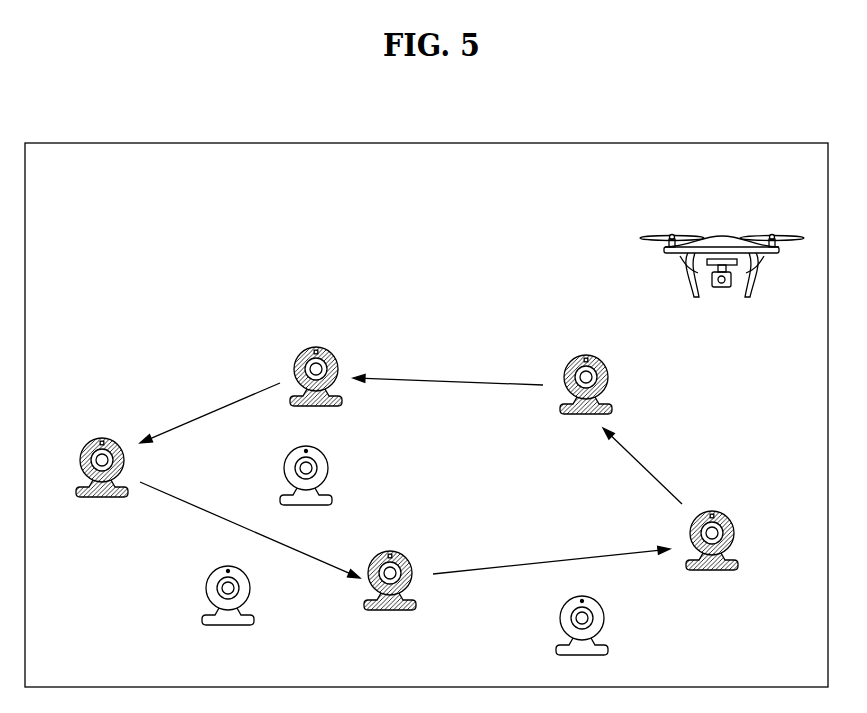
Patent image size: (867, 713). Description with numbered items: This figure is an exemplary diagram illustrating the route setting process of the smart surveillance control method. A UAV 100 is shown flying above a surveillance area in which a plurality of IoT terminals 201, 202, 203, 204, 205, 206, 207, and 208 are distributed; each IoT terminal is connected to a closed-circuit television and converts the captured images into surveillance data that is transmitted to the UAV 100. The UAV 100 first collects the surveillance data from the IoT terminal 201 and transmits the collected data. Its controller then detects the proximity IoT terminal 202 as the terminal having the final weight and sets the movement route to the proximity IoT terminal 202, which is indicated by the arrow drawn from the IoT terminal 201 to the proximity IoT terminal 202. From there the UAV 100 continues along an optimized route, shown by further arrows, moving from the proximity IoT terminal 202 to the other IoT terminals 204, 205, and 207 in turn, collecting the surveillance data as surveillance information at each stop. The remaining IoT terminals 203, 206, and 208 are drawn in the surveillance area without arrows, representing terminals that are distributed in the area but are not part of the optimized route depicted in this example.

The UAV 100 is at (726, 233).
The IoT terminal 201 is at (715, 509).
The proximity IoT terminal 202 is at (590, 353).
The IoT terminal 203 is at (327, 462).
The IoT terminal 204 is at (320, 346).
The IoT terminal 205 is at (106, 436).
The IoT terminal 206 is at (208, 588).
The IoT terminal 207 is at (393, 547).
The IoT terminal 208 is at (602, 617).